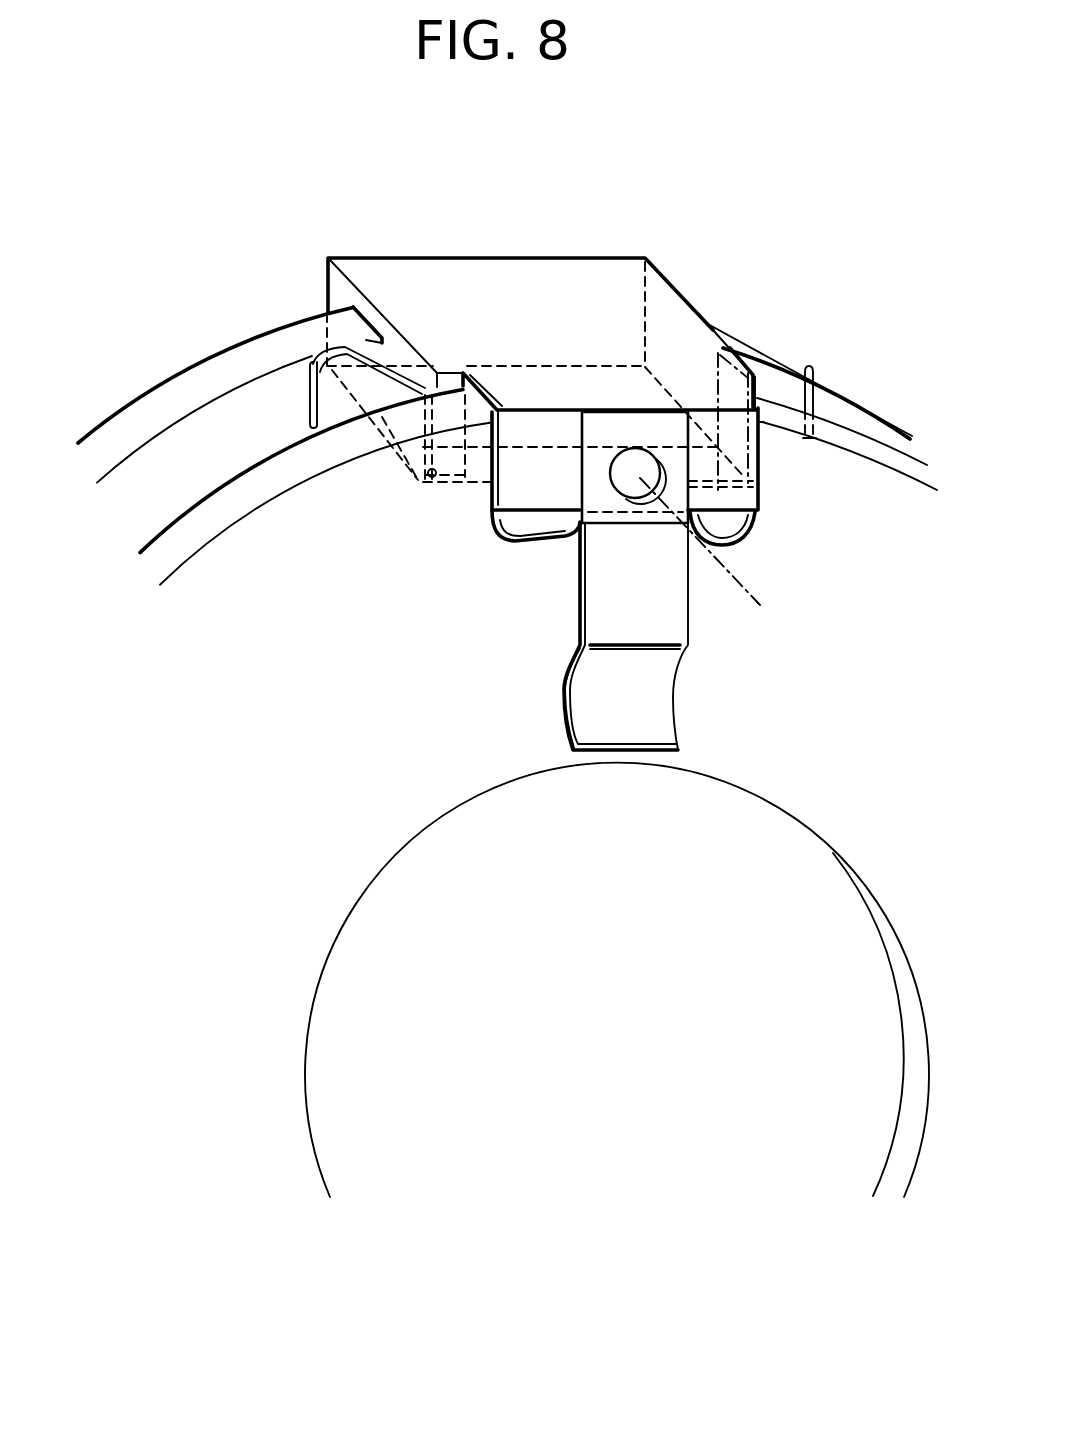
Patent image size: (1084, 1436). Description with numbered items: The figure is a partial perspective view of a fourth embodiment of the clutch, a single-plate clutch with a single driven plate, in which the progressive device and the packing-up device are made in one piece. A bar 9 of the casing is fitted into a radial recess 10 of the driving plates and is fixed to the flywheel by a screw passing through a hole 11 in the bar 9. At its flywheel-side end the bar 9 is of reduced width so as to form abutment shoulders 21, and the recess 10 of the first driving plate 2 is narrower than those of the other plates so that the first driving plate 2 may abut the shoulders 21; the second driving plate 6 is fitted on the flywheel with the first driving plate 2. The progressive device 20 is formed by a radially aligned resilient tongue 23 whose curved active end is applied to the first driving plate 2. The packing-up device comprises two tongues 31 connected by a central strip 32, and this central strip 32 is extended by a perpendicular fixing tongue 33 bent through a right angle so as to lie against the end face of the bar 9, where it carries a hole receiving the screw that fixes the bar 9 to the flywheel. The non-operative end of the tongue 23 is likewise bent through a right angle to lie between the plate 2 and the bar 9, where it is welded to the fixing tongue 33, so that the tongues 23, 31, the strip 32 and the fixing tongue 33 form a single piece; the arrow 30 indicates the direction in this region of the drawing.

The first driving plate 2 is at (243, 500).
The second driving plate 6 is at (207, 387).
The bar 9 is at (500, 280).
The radial recess 10 is at (523, 528).
The hole 11 is at (637, 493).
The progressive device 20 is at (663, 603).
The abutment shoulder 21 is at (450, 380).
The resilient tongue 23 is at (645, 698).
The gap direction 30 is at (400, 466).
The tongue 31 is at (310, 383).
The central strip 32 is at (537, 447).
The fixing tongue 33 is at (640, 430).